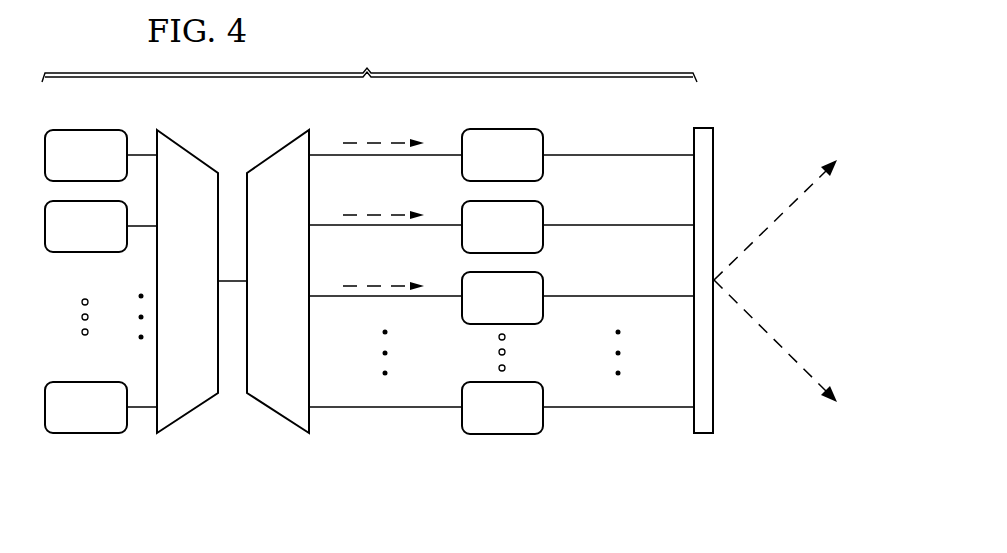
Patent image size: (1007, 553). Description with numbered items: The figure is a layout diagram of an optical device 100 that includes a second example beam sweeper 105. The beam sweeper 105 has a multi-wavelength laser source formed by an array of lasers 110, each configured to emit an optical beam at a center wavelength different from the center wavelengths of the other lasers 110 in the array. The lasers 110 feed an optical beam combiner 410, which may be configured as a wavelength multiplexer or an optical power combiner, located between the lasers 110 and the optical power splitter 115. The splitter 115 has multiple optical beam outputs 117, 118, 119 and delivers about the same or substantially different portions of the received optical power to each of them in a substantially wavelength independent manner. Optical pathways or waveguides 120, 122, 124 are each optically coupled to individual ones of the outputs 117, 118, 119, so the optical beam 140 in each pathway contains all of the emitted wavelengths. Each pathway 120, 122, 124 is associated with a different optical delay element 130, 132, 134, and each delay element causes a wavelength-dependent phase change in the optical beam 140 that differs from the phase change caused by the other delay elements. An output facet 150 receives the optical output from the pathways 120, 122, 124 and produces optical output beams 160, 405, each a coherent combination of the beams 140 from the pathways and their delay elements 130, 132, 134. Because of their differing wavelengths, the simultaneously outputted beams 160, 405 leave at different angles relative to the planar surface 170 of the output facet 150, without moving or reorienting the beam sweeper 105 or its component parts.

The optical device 100 is at (788, 47).
The beam sweeper 105 is at (369, 61).
The lasers 110 is at (67, 168).
The optical beam combiner 410 is at (168, 294).
The optical power splitter 115 is at (259, 294).
The optical beam output 117 is at (313, 152).
The optical beam output 118 is at (313, 223).
The optical beam output 119 is at (313, 300).
The optical beam 140 is at (378, 143).
The optical delay element 130 is at (483, 168).
The optical delay element 132 is at (483, 240).
The optical delay element 134 is at (483, 310).
The optical pathway 120 is at (618, 153).
The optical pathway 122 is at (618, 223).
The optical pathway 124 is at (618, 294).
The output facet 150 is at (706, 119).
The planar surface 170 is at (716, 182).
The optical output beam 160 is at (768, 227).
The optical output beam 405 is at (770, 338).